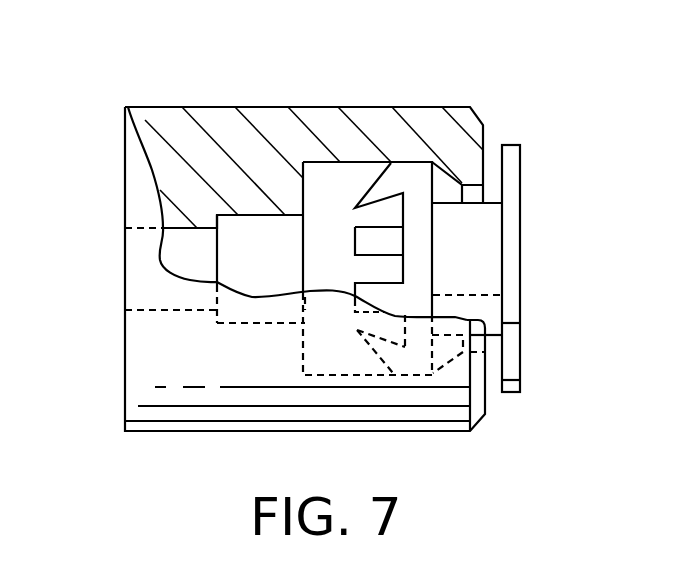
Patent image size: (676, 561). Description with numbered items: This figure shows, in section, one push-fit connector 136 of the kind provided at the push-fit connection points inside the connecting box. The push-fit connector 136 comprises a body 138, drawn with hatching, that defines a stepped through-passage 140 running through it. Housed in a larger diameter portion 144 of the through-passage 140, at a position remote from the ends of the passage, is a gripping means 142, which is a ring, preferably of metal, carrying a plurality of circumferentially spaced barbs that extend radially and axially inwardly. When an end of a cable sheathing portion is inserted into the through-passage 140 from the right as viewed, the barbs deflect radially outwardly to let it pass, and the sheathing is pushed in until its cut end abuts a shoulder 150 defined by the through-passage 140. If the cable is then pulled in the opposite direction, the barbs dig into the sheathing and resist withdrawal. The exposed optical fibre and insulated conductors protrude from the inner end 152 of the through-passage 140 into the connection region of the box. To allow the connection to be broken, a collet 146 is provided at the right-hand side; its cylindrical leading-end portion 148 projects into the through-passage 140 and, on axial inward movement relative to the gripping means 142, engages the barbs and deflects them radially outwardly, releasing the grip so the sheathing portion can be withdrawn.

The push-fit connector 136 is at (557, 286).
The body 138 is at (172, 107).
The stepped through-passage 140 is at (183, 248).
The gripping means 142 is at (375, 183).
The larger diameter portion 144 is at (333, 272).
The collet 146 is at (521, 199).
The cylindrical leading-end portion 148 is at (475, 243).
The shoulder 150 is at (303, 247).
The inner end 152 is at (127, 309).